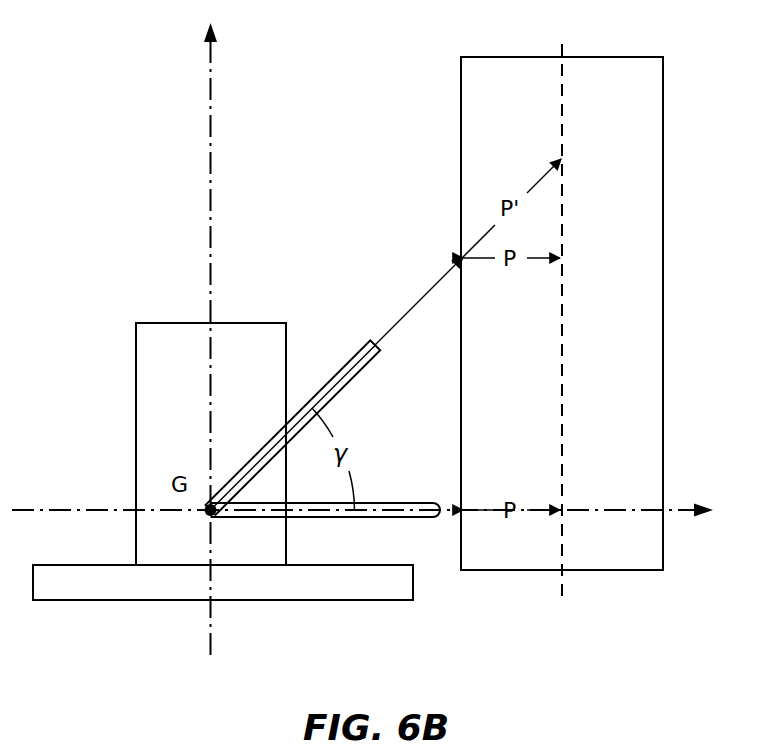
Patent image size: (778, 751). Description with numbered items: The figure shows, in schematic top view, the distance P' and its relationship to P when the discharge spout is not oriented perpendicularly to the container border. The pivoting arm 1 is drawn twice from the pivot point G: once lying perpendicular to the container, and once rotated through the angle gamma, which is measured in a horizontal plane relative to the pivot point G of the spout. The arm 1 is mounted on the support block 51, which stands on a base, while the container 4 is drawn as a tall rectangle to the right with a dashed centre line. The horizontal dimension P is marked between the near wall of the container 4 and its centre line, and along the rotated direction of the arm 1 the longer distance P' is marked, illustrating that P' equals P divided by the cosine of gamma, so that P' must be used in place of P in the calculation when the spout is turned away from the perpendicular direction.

The arm 1 is at (314, 368).
The block 4 is at (637, 273).
The support block 51 is at (136, 380).